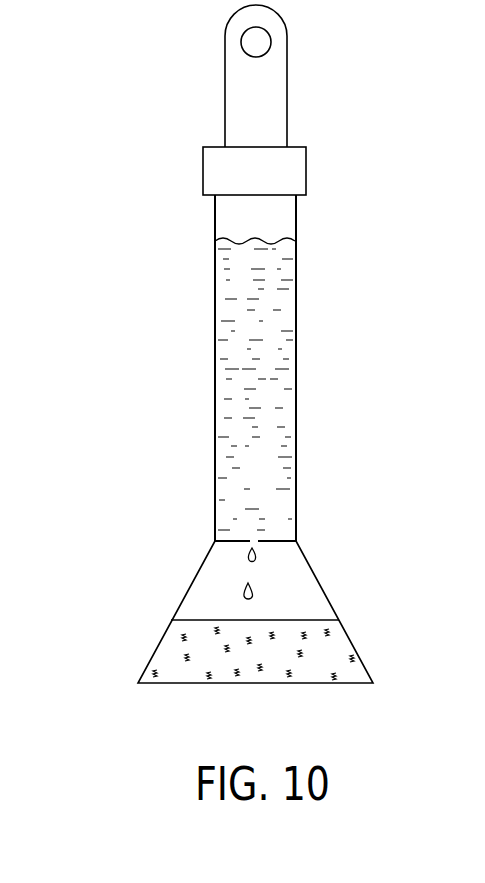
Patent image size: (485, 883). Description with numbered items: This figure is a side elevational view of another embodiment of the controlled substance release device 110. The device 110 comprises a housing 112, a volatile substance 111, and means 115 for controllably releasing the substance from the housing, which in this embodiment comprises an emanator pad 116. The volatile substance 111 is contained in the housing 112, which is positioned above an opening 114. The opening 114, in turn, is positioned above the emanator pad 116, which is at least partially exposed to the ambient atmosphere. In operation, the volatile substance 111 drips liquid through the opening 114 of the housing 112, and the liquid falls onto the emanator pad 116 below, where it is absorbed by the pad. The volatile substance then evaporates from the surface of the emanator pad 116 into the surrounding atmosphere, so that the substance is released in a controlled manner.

The controlled substance release device 110 is at (168, 86).
The volatile substance 111 is at (225, 342).
The housing 112 is at (297, 223).
The opening 114 is at (255, 543).
The means for controllably releasing the substance 115 is at (186, 598).
The emanator pad 116 is at (349, 651).